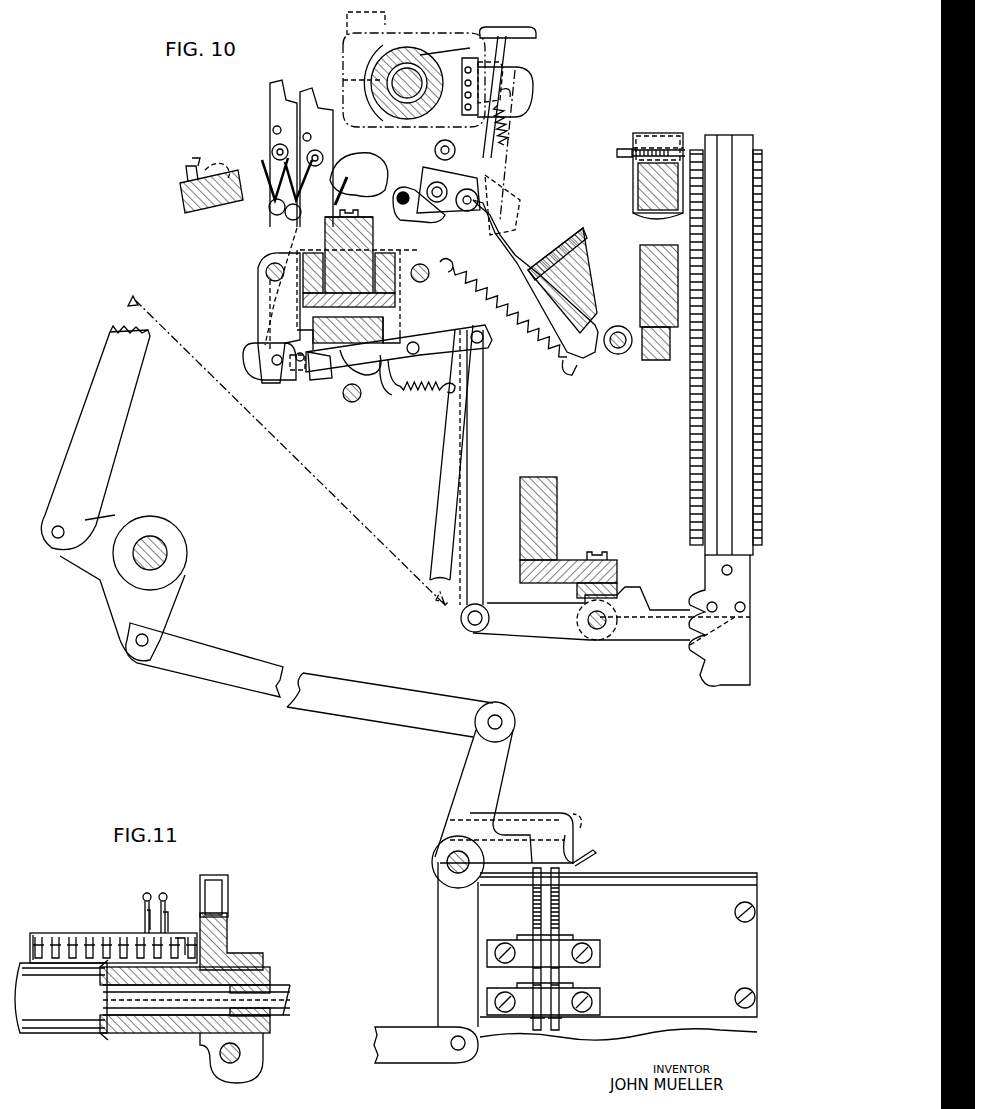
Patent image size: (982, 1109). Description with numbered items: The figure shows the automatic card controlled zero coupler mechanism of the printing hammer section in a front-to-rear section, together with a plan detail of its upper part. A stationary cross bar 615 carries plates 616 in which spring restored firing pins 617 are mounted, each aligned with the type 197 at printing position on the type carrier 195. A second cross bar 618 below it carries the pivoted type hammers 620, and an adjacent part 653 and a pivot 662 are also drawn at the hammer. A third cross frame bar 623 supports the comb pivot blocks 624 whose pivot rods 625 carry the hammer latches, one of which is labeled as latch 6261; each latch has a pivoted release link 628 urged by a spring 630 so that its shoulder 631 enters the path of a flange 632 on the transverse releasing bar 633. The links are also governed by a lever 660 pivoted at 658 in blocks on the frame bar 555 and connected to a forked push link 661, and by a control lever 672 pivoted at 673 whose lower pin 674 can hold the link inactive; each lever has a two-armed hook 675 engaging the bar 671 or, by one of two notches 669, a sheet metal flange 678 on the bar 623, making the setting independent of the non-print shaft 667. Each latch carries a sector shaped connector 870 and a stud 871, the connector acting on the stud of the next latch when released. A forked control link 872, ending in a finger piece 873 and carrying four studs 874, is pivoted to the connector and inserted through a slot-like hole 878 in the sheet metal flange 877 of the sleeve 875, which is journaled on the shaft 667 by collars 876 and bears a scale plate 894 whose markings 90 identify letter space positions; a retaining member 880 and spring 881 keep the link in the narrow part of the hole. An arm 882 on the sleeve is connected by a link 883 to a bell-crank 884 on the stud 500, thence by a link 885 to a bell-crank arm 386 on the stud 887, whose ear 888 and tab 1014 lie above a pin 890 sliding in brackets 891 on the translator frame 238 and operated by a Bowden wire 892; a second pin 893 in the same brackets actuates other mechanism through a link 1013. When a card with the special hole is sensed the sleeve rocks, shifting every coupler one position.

In FIG. 10, the scale plate 894 is at (403, 33).
In FIG. 11, the scale plate 894 is at (65, 1005).
In FIG. 10, the sheet metal flange 877 is at (438, 50).
In FIG. 11, the sheet metal flange 877 is at (95, 933).
In FIG. 10, the finger piece 873 is at (520, 29).
In FIG. 11, the finger piece 873 is at (140, 900).
In FIG. 10, the non-print shaft 667 is at (387, 63).
In FIG. 11, the non-print shaft 667 is at (270, 985).
In FIG. 10, the universal connector-shifting member 875 is at (380, 77).
In FIG. 11, the universal connector-shifting member 875 is at (92, 1035).
In FIG. 10, the studs 874 is at (475, 79).
In FIG. 11, the studs 874 is at (181, 919).
In FIG. 10, the retaining member 880 is at (503, 69).
In FIG. 11, the retaining member 880 is at (165, 893).
In FIG. 10, the arm 882 is at (534, 100).
In FIG. 11, the arm 882 is at (232, 950).
In FIG. 10, the spring 881 is at (490, 126).
In FIG. 11, the spring 881 is at (147, 893).
In FIG. 10, the forked control link 872 is at (433, 145).
In FIG. 11, the forked control link 872 is at (190, 934).
In FIG. 10, the connector 870 is at (497, 160).
In FIG. 10, the stud 871 is at (416, 188).
In FIG. 10, the link 883 is at (507, 193).
In FIG. 11, the link 883 is at (230, 895).
In FIG. 10, the notches 669 is at (330, 175).
In FIG. 10, the two-armed hook 675 is at (310, 107).
In FIG. 10, the bar 671 is at (185, 208).
In FIG. 10, the sheet metal flange 678 is at (297, 231).
In FIG. 10, the cross frame bar 623 is at (337, 253).
In FIG. 10, the pivot 673 is at (266, 270).
In FIG. 10, the comb pivot blocks 624 is at (372, 250).
In FIG. 10, the control lever 672 is at (267, 312).
In FIG. 10, the pin 674 is at (273, 358).
In FIG. 10, the flange 632 is at (305, 375).
In FIG. 10, the shoulder 631 is at (328, 380).
In FIG. 10, the releasing bar 633 is at (352, 403).
In FIG. 10, the release link 628 is at (392, 395).
In FIG. 10, the spring 630 is at (430, 390).
In FIG. 10, the pivot rods 625 is at (428, 282).
In FIG. 10, the lever arm 6261 is at (425, 305).
In FIG. 10, the type hammer 620 is at (505, 240).
In FIG. 10, the armature 653 is at (555, 278).
In FIG. 10, the pivot 662 is at (614, 354).
In FIG. 10, the second cross bar 618 is at (640, 286).
In FIG. 10, the stationary cross bar 615 is at (640, 191).
In FIG. 10, the plates 616 is at (645, 213).
In FIG. 10, the firing pin 617 is at (620, 150).
In FIG. 10, the type carrier 195 is at (745, 228).
In FIG. 10, the type 197 is at (762, 162).
In FIG. 10, the bell-crank 884 is at (102, 515).
In FIG. 10, the stud 500 is at (167, 553).
In FIG. 10, the link 885 is at (315, 712).
In FIG. 10, the arm 386 is at (462, 783).
In FIG. 10, the stud 887 is at (442, 854).
In FIG. 10, the ear 888 is at (525, 820).
In FIG. 10, the tab 1014 is at (578, 838).
In FIG. 10, the translator frame 238 is at (712, 873).
In FIG. 10, the brackets 891 is at (600, 950).
In FIG. 10, the pin 890 is at (533, 916).
In FIG. 10, the pin 893 is at (559, 916).
In FIG. 10, the Bowden wire 892 is at (530, 1024).
In FIG. 10, the link 1013 is at (392, 1035).
In FIG. 10, the push link 661 is at (480, 473).
In FIG. 10, the lever 660 is at (525, 630).
In FIG. 10, the pivot 658 is at (600, 630).
In FIG. 10, the frame bar 555 is at (563, 560).
In FIG. 11, the slot-like holes 878 is at (75, 935).
In FIG. 11, the collars 876 is at (272, 1018).
In FIG. 11, the dial drum 90 is at (56, 1000).